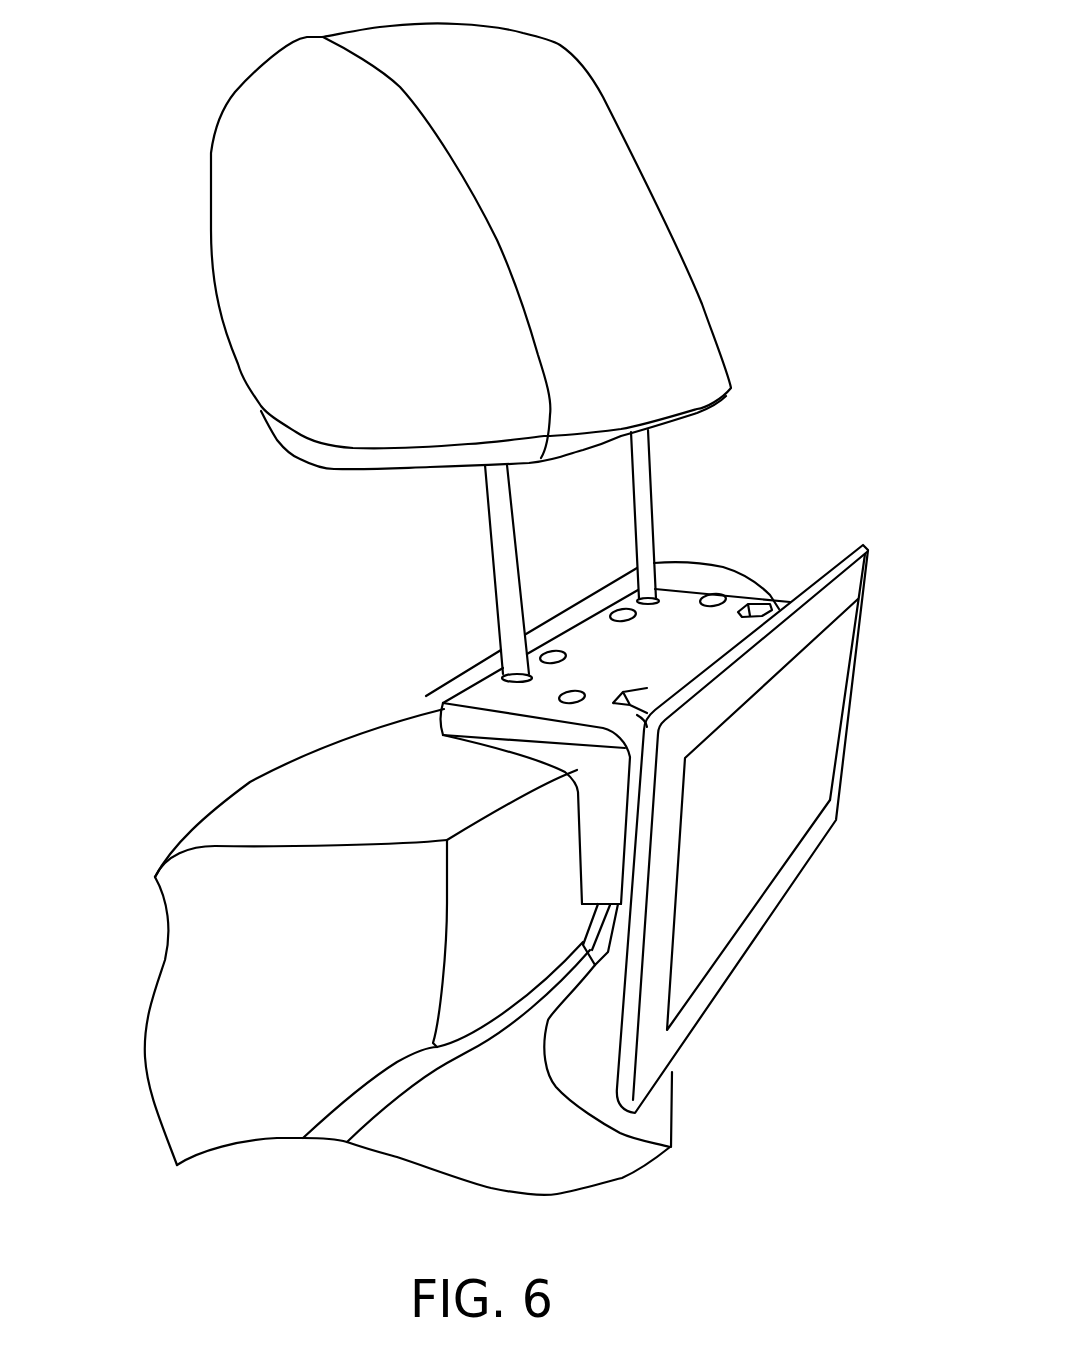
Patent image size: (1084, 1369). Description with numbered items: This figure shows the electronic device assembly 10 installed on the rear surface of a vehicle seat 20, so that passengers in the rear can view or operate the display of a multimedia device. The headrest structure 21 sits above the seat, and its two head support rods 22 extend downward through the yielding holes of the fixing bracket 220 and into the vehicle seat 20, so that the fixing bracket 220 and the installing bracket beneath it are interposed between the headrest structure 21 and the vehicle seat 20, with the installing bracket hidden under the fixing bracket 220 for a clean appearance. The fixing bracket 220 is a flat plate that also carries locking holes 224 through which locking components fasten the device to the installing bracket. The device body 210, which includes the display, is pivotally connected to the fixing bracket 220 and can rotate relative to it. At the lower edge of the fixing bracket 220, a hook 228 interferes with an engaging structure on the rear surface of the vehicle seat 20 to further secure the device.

The electronic device assembly 10 is at (564, 822).
The vehicle seat 20 is at (237, 913).
The headrest structure 21 is at (514, 145).
The head support rods 22 is at (640, 498).
The device body 210 is at (755, 783).
The fixing bracket 220 is at (564, 822).
The locking hole 224 is at (512, 681).
The hook 228 is at (670, 1147).